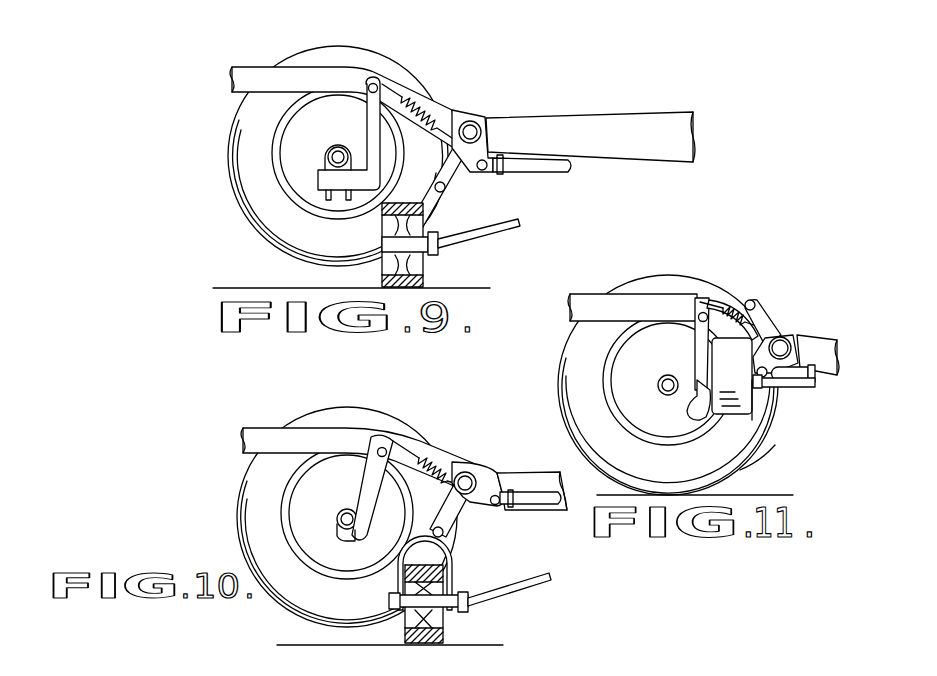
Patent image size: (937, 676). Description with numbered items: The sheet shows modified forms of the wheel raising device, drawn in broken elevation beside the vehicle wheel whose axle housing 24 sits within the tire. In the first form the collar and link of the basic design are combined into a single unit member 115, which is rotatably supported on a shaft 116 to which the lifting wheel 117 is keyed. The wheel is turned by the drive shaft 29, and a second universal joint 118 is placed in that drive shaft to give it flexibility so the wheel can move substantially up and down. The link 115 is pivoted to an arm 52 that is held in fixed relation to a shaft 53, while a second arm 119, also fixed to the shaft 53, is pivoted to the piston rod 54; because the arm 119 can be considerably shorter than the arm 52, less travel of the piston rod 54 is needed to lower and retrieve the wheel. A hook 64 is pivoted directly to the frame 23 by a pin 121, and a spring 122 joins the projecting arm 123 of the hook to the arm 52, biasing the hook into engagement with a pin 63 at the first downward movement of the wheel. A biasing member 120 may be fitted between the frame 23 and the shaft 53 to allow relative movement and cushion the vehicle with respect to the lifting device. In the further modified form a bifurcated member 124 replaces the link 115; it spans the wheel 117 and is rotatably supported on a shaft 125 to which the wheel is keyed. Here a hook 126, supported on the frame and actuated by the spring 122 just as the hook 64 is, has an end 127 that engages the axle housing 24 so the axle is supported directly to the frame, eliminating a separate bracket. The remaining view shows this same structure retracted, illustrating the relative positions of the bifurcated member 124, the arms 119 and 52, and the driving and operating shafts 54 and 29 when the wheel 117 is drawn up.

In FIG. 9, the frame 23 is at (620, 127).
In FIG. 9, the axle housing 24 is at (328, 158).
In FIG. 10, the axle housing 24 is at (337, 516).
In FIG. 9, the drive shaft 29 is at (497, 233).
In FIG. 11, the drive shaft 29 is at (817, 386).
In FIG. 9, the arm 52 is at (440, 165).
In FIG. 11, the arm 52 is at (760, 312).
In FIG. 9, the shaft 53 is at (491, 119).
In FIG. 9, the piston rod 54 is at (562, 170).
In FIG. 11, the piston rod 54 is at (797, 366).
In FIG. 9, the pin 63 is at (351, 152).
In FIG. 9, the hook 64 is at (367, 126).
In FIG. 9, the unit member 115 is at (450, 208).
In FIG. 9, the shaft 116 is at (425, 262).
In FIG. 9, the wheel 117 is at (393, 203).
In FIG. 10, the wheel 117 is at (445, 633).
In FIG. 11, the wheel 117 is at (755, 449).
In FIG. 9, the second universal joint 118 is at (438, 248).
In FIG. 11, the second universal joint 118 is at (772, 417).
In FIG. 9, the second arm 119 is at (489, 146).
In FIG. 11, the second arm 119 is at (765, 358).
In FIG. 9, the biasing member 120 is at (475, 107).
In FIG. 9, the pin 121 is at (376, 84).
In FIG. 9, the spring 122 is at (423, 101).
In FIG. 10, the spring 122 is at (437, 468).
In FIG. 9, the projecting arm 123 is at (381, 75).
In FIG. 10, the bifurcated member 124 is at (455, 561).
In FIG. 11, the bifurcated member 124 is at (738, 300).
In FIG. 10, the shaft 125 is at (463, 596).
In FIG. 10, the hook 126 is at (370, 508).
In FIG. 10, the end 127 is at (357, 538).